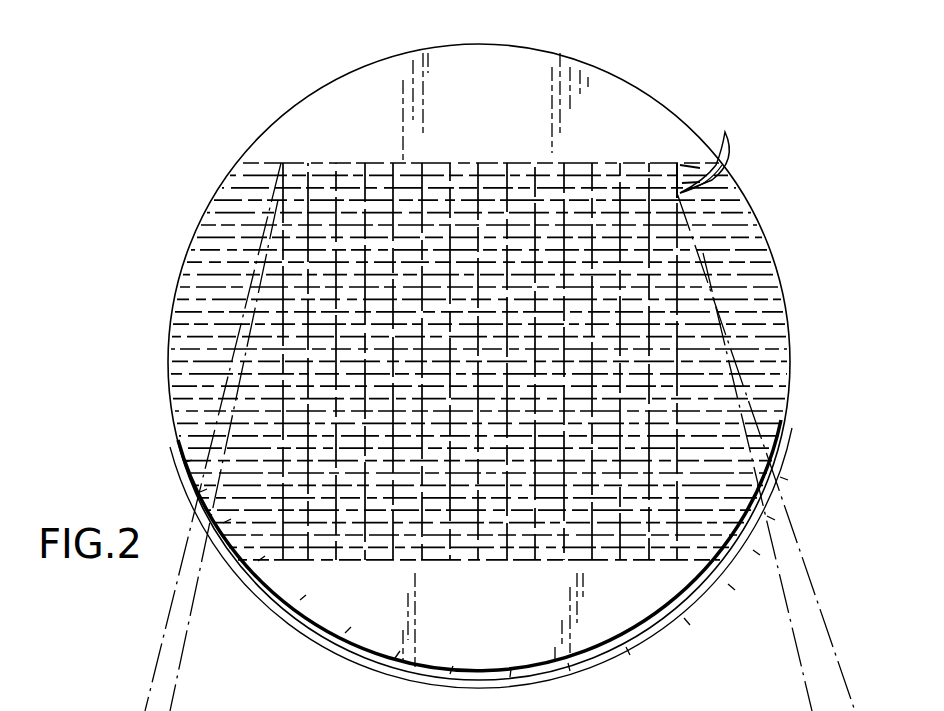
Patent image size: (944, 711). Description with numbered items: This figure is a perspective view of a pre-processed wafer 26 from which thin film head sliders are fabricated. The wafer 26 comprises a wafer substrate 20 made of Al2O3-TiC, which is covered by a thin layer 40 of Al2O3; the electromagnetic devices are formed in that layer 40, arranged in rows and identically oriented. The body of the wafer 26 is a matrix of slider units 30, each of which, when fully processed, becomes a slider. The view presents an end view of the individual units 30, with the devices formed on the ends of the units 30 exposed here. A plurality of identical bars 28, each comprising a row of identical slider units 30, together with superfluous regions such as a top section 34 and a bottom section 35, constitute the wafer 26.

The wafer substrate 20 is at (663, 627).
The wafer 26 is at (796, 232).
The bar 28 is at (721, 152).
The slider unit 30 is at (356, 165).
The top section 34 is at (490, 105).
The bottom section 35 is at (500, 618).
The thin layer 40 is at (350, 612).